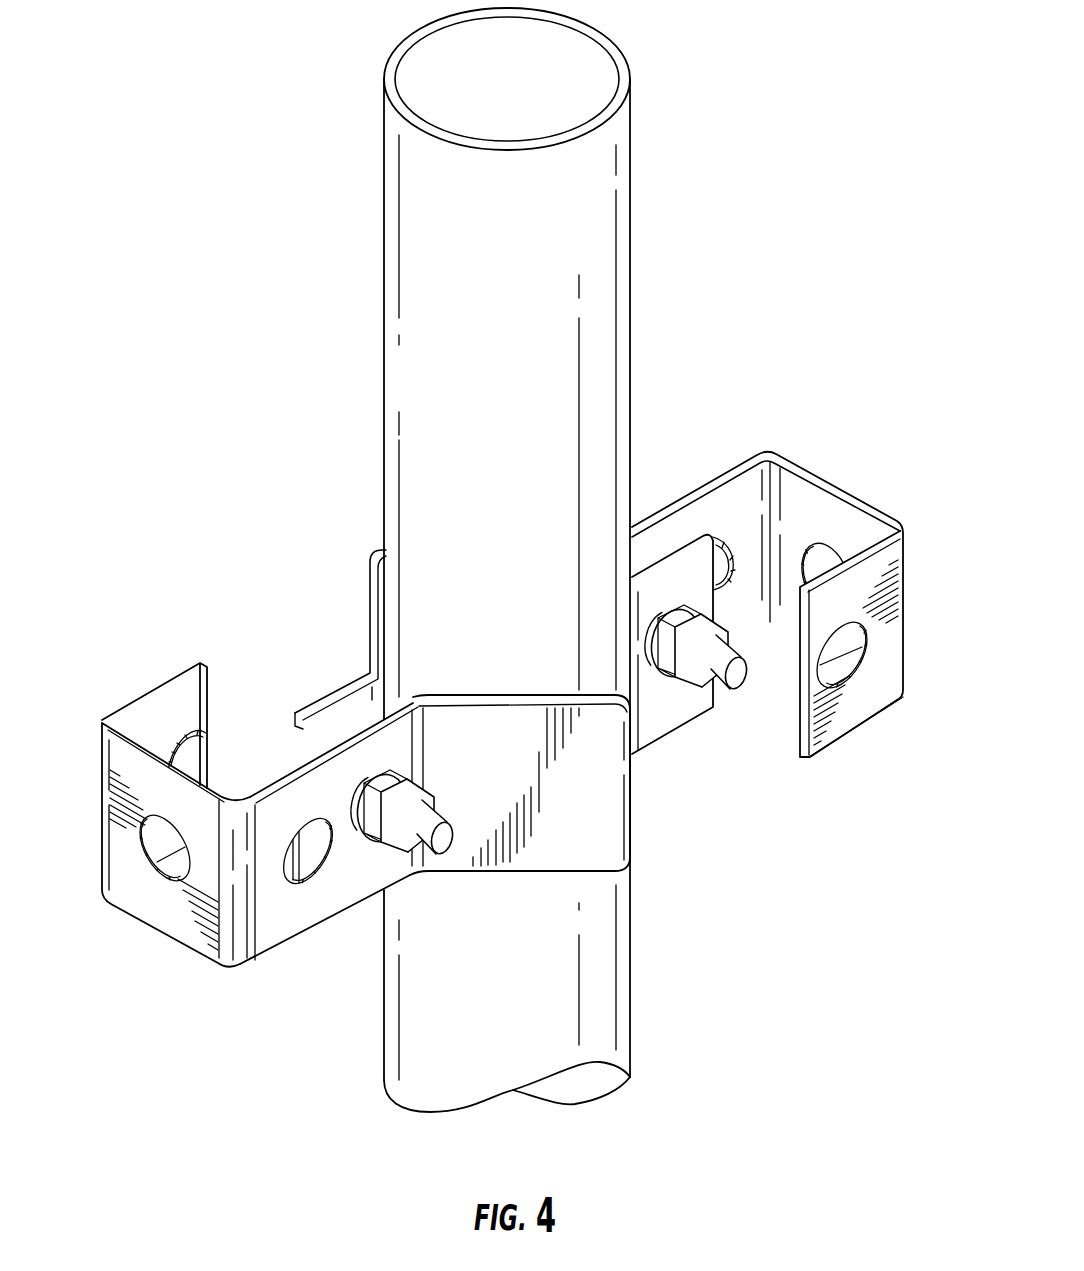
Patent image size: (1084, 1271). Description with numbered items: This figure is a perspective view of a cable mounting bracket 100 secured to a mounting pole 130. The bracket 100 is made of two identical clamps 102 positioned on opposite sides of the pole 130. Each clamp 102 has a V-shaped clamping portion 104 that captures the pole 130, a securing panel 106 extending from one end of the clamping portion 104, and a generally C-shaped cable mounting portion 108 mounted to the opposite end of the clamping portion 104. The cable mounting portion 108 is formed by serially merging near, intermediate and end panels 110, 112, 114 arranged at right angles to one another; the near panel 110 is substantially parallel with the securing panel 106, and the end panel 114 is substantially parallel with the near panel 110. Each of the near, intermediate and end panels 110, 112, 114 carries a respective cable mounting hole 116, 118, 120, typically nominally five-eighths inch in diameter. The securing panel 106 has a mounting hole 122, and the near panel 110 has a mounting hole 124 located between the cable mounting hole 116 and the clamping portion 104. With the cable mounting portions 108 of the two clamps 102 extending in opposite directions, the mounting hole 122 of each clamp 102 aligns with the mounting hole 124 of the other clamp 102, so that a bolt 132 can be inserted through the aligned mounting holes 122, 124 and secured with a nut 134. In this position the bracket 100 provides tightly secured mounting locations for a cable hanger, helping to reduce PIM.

The cable mounting bracket 100 is at (499, 560).
The clamp 102 is at (914, 495).
The V-shaped clamping portion 104 is at (592, 805).
The securing panel 106 is at (680, 705).
The cable mounting portion 108 is at (231, 818).
The near panel 110 is at (316, 860).
The intermediate panel 112 is at (151, 845).
The end panel 114 is at (183, 701).
The cable mounting hole 116 is at (312, 848).
The cable mounting hole 118 is at (140, 848).
The cable mounting hole 120 is at (182, 752).
The mounting hole 122 is at (758, 585).
The mounting hole 124 is at (376, 855).
The mounting pole 130 is at (600, 283).
The bolt 132 is at (738, 678).
The nut 134 is at (716, 630).